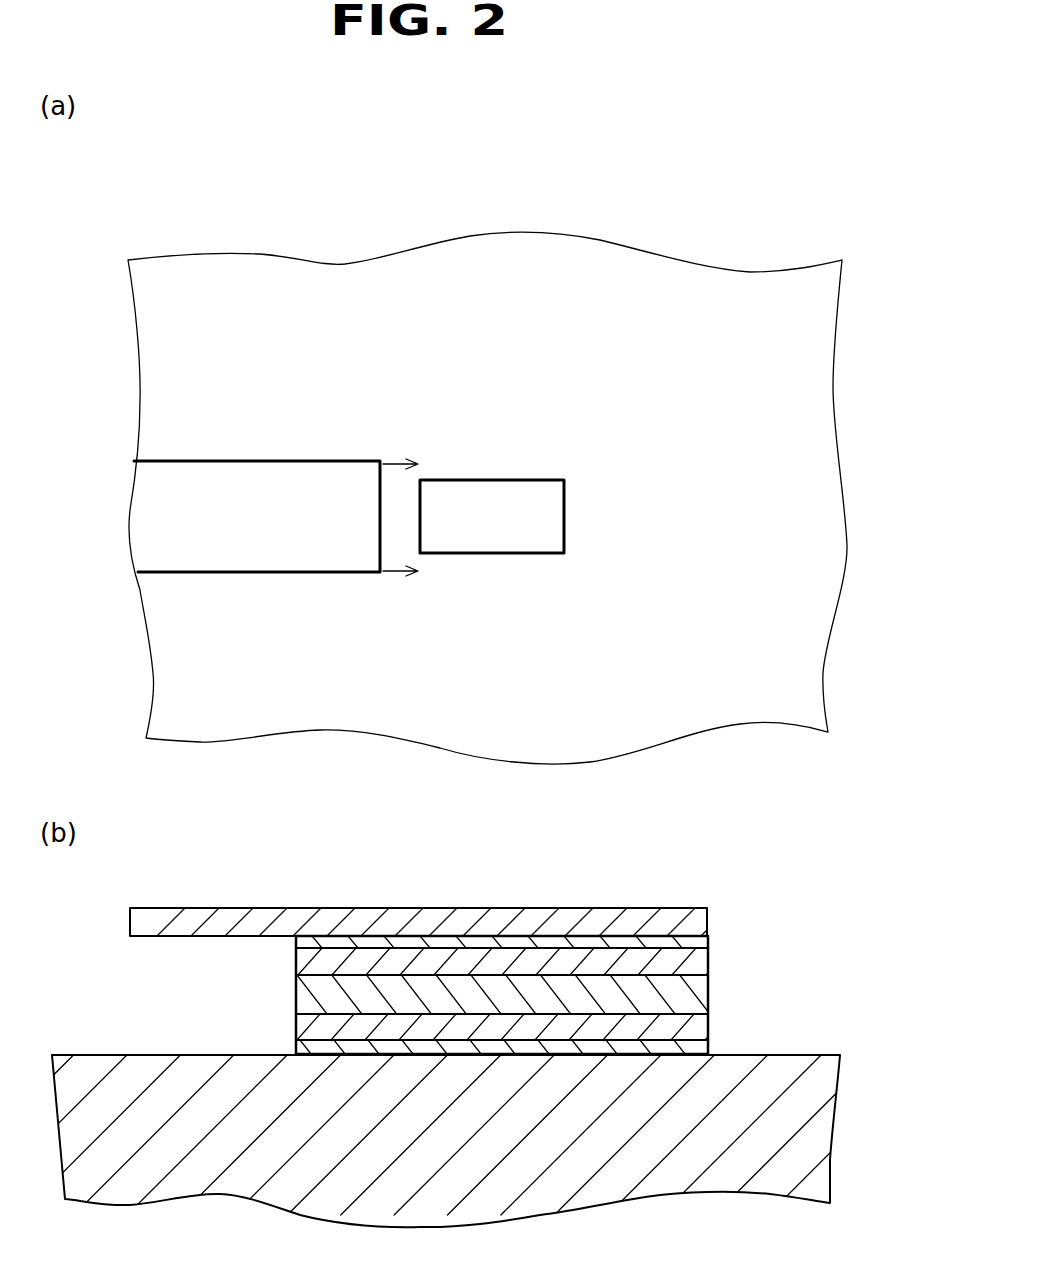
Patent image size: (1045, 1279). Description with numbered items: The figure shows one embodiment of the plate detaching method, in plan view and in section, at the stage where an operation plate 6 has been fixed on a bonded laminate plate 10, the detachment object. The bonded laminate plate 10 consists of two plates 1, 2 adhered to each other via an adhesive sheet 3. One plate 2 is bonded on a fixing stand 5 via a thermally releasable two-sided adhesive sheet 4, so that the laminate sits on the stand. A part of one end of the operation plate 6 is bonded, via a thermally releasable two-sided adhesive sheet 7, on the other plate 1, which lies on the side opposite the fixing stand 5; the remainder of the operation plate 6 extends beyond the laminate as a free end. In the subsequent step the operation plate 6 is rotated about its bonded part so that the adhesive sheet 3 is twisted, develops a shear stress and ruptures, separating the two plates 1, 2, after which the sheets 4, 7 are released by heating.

The plate 1 is at (695, 950).
The plate 2 is at (698, 1033).
The adhesive sheet 3 is at (692, 988).
The thermally releasable two-sided adhesive sheet 4 is at (296, 1048).
The fixing stand 5 is at (712, 316).
The operation plate 6 is at (256, 490).
The thermally releasable two-sided adhesive sheet 7 is at (695, 940).
The bonded laminate plate 10 is at (507, 453).